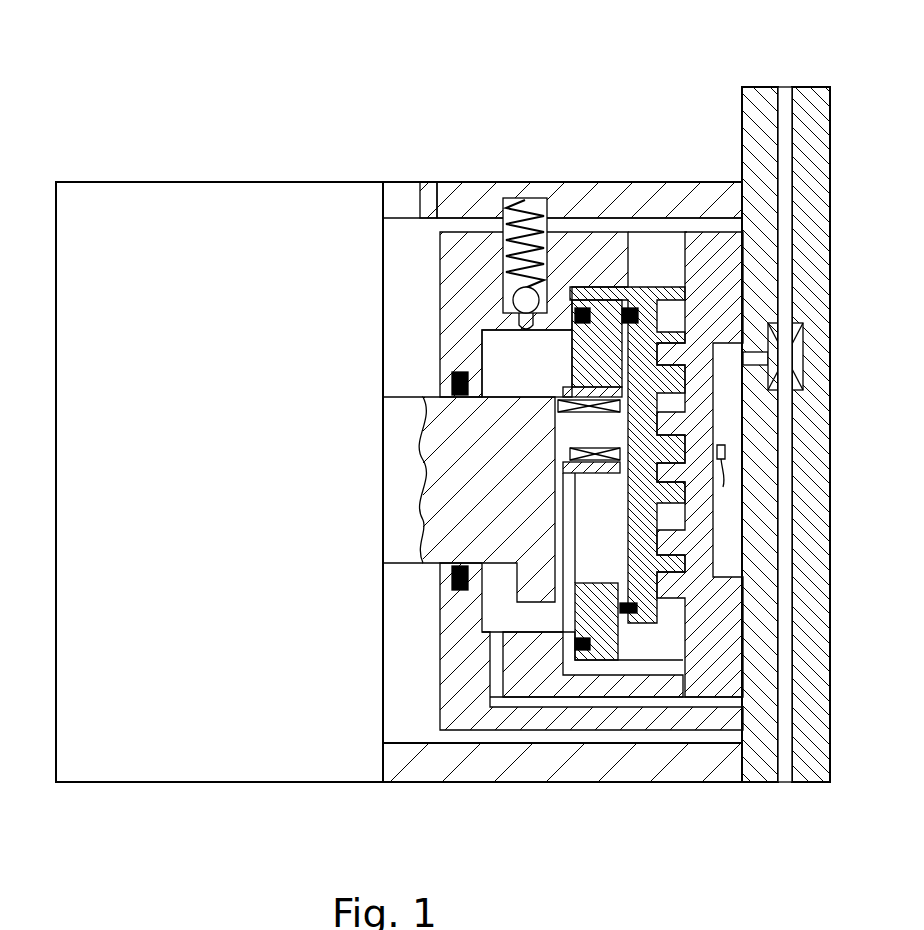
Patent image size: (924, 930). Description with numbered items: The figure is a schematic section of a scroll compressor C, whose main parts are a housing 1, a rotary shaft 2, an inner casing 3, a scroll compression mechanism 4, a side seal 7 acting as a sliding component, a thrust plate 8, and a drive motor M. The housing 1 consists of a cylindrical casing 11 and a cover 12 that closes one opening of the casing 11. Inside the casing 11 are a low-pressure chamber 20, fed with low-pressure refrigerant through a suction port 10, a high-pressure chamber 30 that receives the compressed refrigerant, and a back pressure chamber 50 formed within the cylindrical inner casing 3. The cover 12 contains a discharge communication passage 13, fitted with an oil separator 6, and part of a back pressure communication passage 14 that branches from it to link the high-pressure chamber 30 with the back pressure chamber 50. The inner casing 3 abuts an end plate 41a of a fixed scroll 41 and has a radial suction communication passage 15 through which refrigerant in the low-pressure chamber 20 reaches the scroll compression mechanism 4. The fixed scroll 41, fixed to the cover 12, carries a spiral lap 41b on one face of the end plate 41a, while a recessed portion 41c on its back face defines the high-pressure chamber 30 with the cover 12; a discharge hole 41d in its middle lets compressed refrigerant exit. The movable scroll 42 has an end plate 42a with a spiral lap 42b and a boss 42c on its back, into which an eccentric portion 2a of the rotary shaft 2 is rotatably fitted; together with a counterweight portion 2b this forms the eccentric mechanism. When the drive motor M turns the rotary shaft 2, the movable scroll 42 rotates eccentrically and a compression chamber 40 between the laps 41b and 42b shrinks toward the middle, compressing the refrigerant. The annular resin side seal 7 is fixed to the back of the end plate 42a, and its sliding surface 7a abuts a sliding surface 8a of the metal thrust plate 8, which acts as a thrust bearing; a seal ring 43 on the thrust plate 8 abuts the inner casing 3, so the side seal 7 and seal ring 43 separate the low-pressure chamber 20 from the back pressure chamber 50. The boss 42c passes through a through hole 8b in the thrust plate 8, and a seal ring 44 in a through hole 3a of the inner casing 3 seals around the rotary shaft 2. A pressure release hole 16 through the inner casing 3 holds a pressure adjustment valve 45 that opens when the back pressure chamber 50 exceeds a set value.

The housing 1 is at (802, 855).
The rotary shaft 2 is at (398, 570).
The eccentric portion 2a is at (587, 430).
The counterweight portion 2b is at (527, 577).
The inner casing 3 is at (482, 215).
The through hole 3a is at (460, 400).
The scroll compression mechanism 4 is at (728, 85).
The oil separator 6 is at (803, 352).
The side seal 7 is at (650, 290).
The sliding surface 7a is at (598, 650).
The thrust plate 8 is at (588, 310).
The sliding surface 8a is at (630, 608).
The through hole 8b is at (580, 655).
The suction port 10 is at (432, 205).
The casing 11 is at (707, 770).
The cover 12 is at (782, 768).
The discharge communication passage 13 is at (783, 103).
The back pressure communication passage 14 is at (687, 700).
The suction communication passage 15 is at (716, 221).
The pressure release hole 16 is at (522, 328).
The low-pressure chamber 20 is at (410, 250).
The high-pressure chamber 30 is at (728, 560).
The compression chamber 40 is at (726, 465).
The fixed scroll 41 is at (723, 243).
The end plate 41a is at (712, 245).
The spiral lap 41b is at (713, 430).
The recessed portion 41c is at (752, 360).
The discharge hole 41d is at (690, 480).
The movable scroll 42 is at (645, 288).
The end plate 42a is at (660, 330).
The spiral lap 42b is at (665, 525).
The boss 42c is at (570, 500).
The seal ring 43 is at (560, 690).
The seal ring 44 is at (455, 380).
The pressure adjustment valve 45 is at (515, 215).
The back pressure chamber 50 is at (500, 350).
The scroll compressor C is at (190, 163).
The drive motor M is at (213, 755).